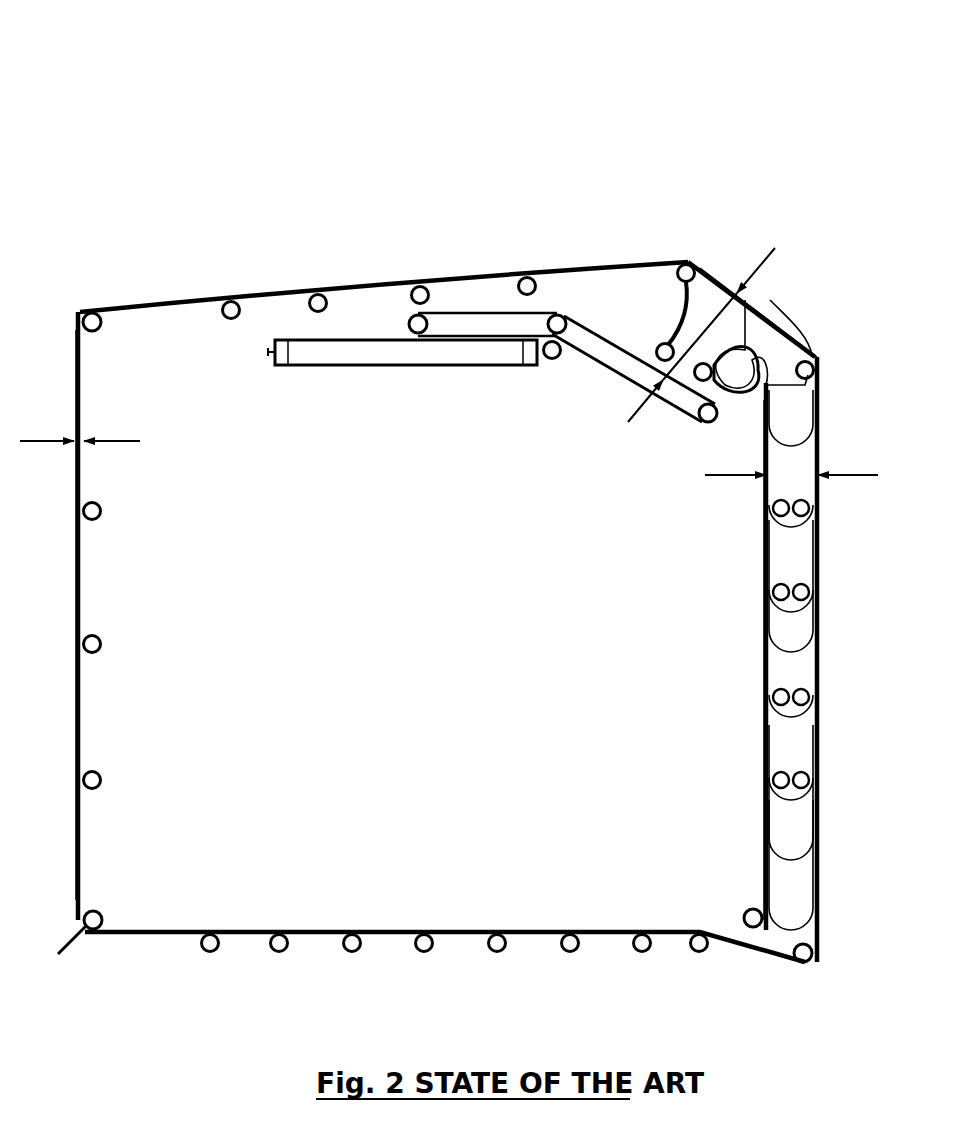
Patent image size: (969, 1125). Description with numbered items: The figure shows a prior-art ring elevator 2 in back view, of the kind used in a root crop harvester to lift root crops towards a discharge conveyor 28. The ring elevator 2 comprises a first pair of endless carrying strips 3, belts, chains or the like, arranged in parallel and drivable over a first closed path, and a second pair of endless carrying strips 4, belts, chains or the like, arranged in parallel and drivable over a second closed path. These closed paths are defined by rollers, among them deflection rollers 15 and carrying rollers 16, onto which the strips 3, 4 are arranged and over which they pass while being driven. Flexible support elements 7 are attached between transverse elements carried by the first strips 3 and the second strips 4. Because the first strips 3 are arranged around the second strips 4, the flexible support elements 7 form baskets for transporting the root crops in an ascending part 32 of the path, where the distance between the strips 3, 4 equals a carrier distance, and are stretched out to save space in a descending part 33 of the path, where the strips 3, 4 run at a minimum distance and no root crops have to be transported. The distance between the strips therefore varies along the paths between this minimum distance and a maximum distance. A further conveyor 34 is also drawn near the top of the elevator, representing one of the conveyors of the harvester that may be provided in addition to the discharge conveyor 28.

The ring elevator 2 is at (180, 178).
The first pair of endless carrying strips 3 is at (777, 330).
The second pair of endless carrying strips 4 is at (765, 797).
The flexible support elements 7 is at (778, 722).
The deflection rollers 15 is at (803, 955).
The carrying rollers 16 is at (278, 945).
The discharge conveyor 28 is at (363, 367).
The ascending part 32 is at (745, 560).
The descending part 33 is at (108, 612).
The conveyor 34 is at (600, 365).